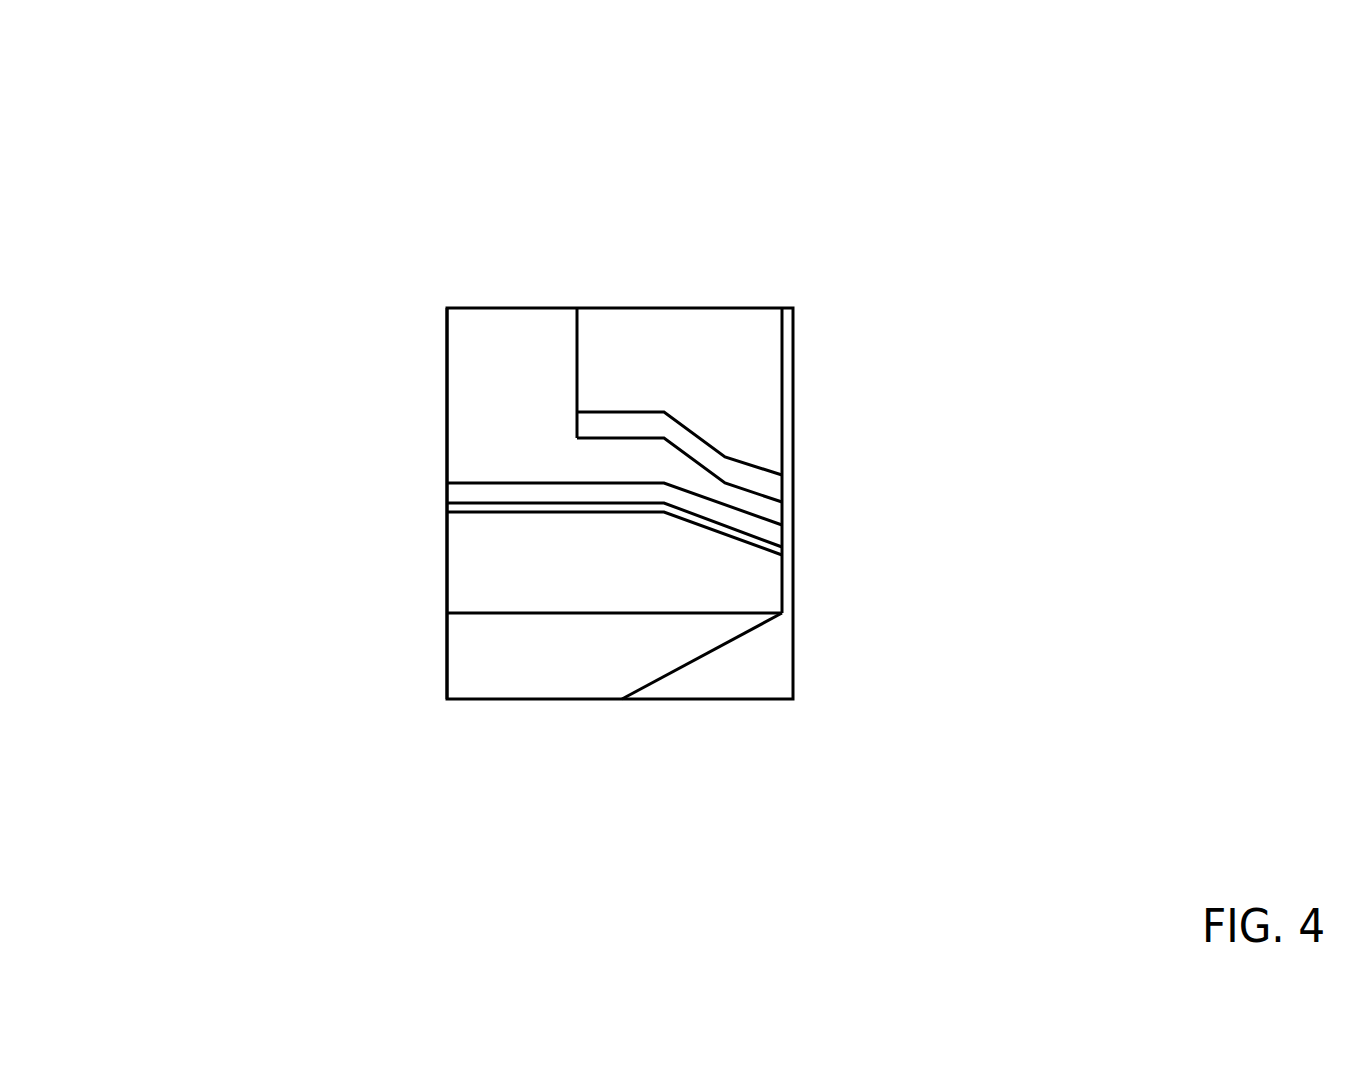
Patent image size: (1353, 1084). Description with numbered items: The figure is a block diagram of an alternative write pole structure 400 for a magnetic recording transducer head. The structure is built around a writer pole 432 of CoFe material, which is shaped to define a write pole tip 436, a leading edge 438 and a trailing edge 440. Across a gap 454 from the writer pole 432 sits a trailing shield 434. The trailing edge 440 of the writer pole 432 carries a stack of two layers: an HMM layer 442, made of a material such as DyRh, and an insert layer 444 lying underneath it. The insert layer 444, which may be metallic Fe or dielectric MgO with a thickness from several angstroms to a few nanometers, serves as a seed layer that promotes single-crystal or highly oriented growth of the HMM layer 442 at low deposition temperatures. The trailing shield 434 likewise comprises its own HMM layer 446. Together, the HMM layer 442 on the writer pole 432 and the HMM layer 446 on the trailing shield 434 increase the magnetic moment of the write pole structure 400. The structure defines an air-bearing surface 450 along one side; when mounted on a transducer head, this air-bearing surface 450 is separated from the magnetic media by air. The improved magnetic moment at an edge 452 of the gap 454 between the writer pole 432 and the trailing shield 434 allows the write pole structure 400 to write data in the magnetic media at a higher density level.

The write pole structure 400 is at (176, 117).
The writer pole 432 is at (447, 568).
The trailing shield 434 is at (620, 348).
The write pole tip 436 is at (782, 590).
The leading edge 438 is at (728, 643).
The trailing edge 440 is at (783, 523).
The HMM layer 442 is at (447, 483).
The insert layer 444 is at (447, 510).
The HMM layer 446 is at (782, 497).
The air-bearing surface 450 is at (793, 338).
The edge 452 is at (797, 512).
The gap 454 is at (668, 466).